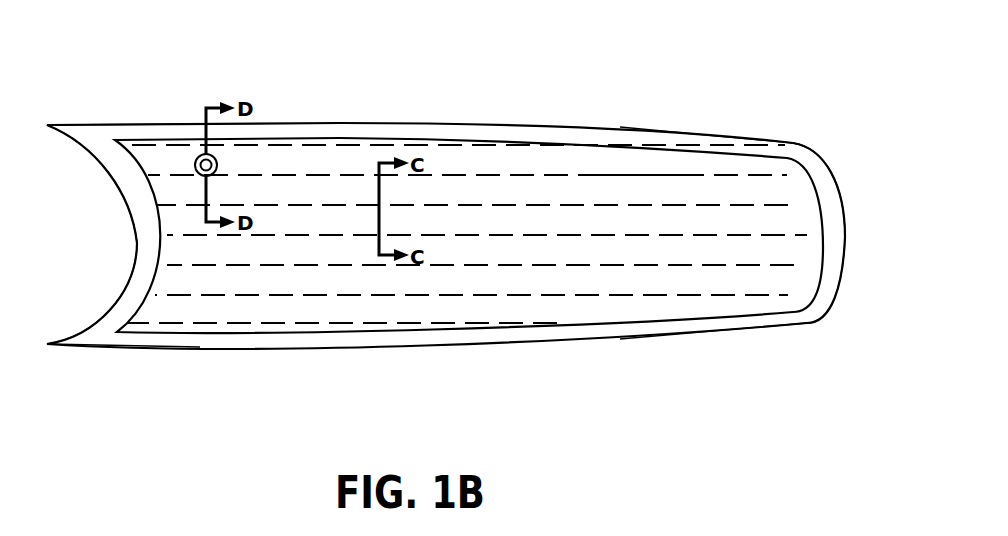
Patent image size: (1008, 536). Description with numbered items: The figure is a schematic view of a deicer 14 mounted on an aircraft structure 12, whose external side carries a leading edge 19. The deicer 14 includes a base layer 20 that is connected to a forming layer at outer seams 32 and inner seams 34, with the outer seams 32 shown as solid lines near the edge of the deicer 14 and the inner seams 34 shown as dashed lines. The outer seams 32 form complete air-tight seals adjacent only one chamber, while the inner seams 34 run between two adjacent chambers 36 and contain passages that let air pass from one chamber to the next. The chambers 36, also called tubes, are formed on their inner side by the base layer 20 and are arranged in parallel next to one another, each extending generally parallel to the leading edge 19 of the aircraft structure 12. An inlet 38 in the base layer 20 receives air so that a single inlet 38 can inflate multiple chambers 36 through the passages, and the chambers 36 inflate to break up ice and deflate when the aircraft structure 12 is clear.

The aircraft structure 12 is at (90, 112).
The deicer 14 is at (334, 124).
The leading edge 19 is at (832, 247).
The base layer 20 is at (112, 291).
The outer seams 32 is at (618, 147).
The inner seams 34 is at (508, 293).
The chambers 36 is at (672, 197).
The inlet 38 is at (195, 164).